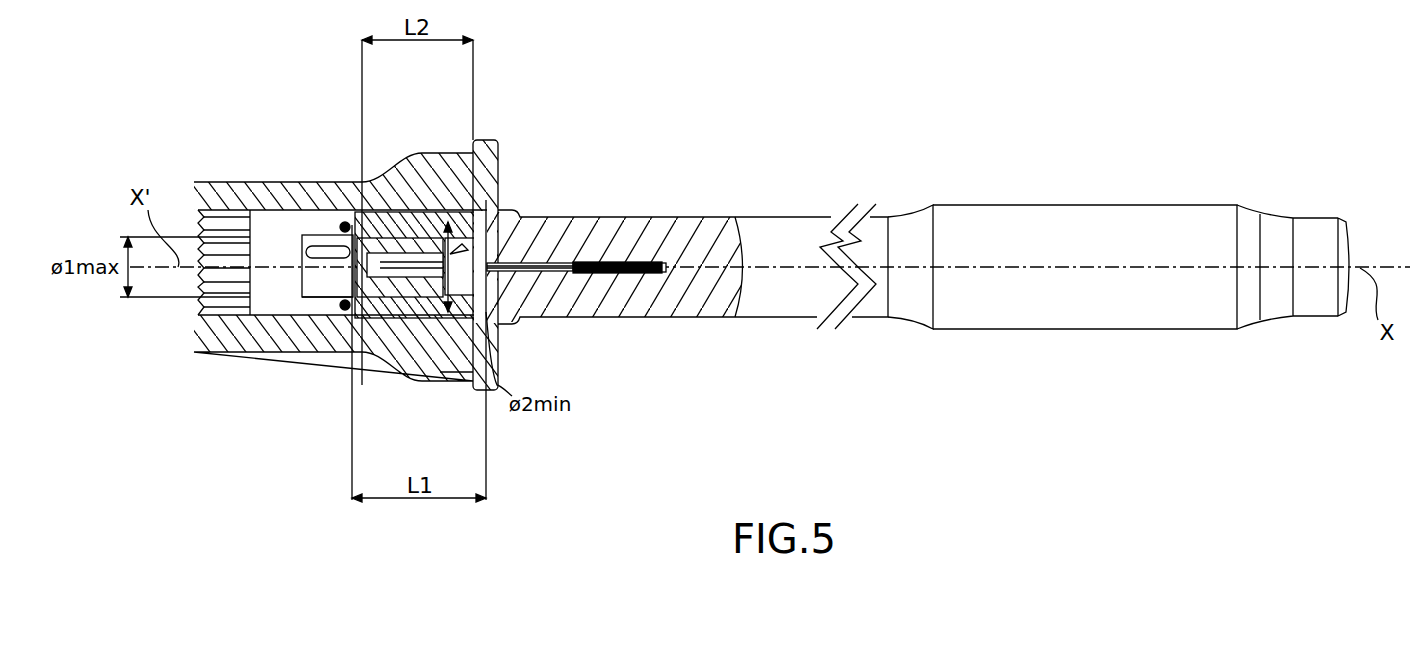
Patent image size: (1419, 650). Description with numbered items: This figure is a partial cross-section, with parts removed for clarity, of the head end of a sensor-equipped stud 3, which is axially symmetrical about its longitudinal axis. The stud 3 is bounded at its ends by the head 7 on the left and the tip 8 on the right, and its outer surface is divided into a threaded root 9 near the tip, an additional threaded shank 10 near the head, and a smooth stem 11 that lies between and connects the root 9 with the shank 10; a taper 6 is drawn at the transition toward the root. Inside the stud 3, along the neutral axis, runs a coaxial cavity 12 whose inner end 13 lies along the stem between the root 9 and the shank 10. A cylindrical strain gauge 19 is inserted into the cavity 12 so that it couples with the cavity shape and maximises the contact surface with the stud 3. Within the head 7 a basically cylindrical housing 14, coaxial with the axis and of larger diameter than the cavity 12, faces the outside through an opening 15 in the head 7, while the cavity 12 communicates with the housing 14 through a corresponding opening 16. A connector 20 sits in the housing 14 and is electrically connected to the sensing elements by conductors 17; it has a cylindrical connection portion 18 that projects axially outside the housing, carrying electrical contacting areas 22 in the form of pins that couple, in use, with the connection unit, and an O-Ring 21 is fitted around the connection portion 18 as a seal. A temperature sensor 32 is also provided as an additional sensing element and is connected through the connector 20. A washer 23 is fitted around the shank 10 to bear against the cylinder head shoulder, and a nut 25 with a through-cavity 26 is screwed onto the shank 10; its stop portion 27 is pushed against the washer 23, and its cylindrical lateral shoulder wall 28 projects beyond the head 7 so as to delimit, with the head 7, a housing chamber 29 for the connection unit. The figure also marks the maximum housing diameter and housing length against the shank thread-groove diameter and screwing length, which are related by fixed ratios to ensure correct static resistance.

The stud 3 is at (1062, 136).
The shoulder 6 is at (907, 204).
The head 7 is at (370, 196).
The tip 8 is at (1312, 217).
The root 9 is at (1122, 199).
The shank 10 is at (428, 211).
The stem 11 is at (775, 213).
The cavity 12 is at (600, 262).
The inner end 13 is at (669, 274).
The housing 14 is at (468, 289).
The opening 15 is at (382, 288).
The opening 16 is at (550, 262).
The conductors 17 is at (583, 317).
The connection portion 18 is at (310, 297).
The strain gauge 19 is at (620, 262).
The connector 20 is at (415, 280).
The O-Ring 21 is at (345, 226).
The electrical contacting areas 22 is at (317, 250).
The washer 23 is at (492, 153).
The nut 25 is at (254, 180).
The through-cavity 26 is at (283, 300).
The stop portion 27 is at (456, 372).
The lateral shoulder wall 28 is at (228, 346).
The housing chamber 29 is at (241, 335).
The temperature sensor 32 is at (485, 242).